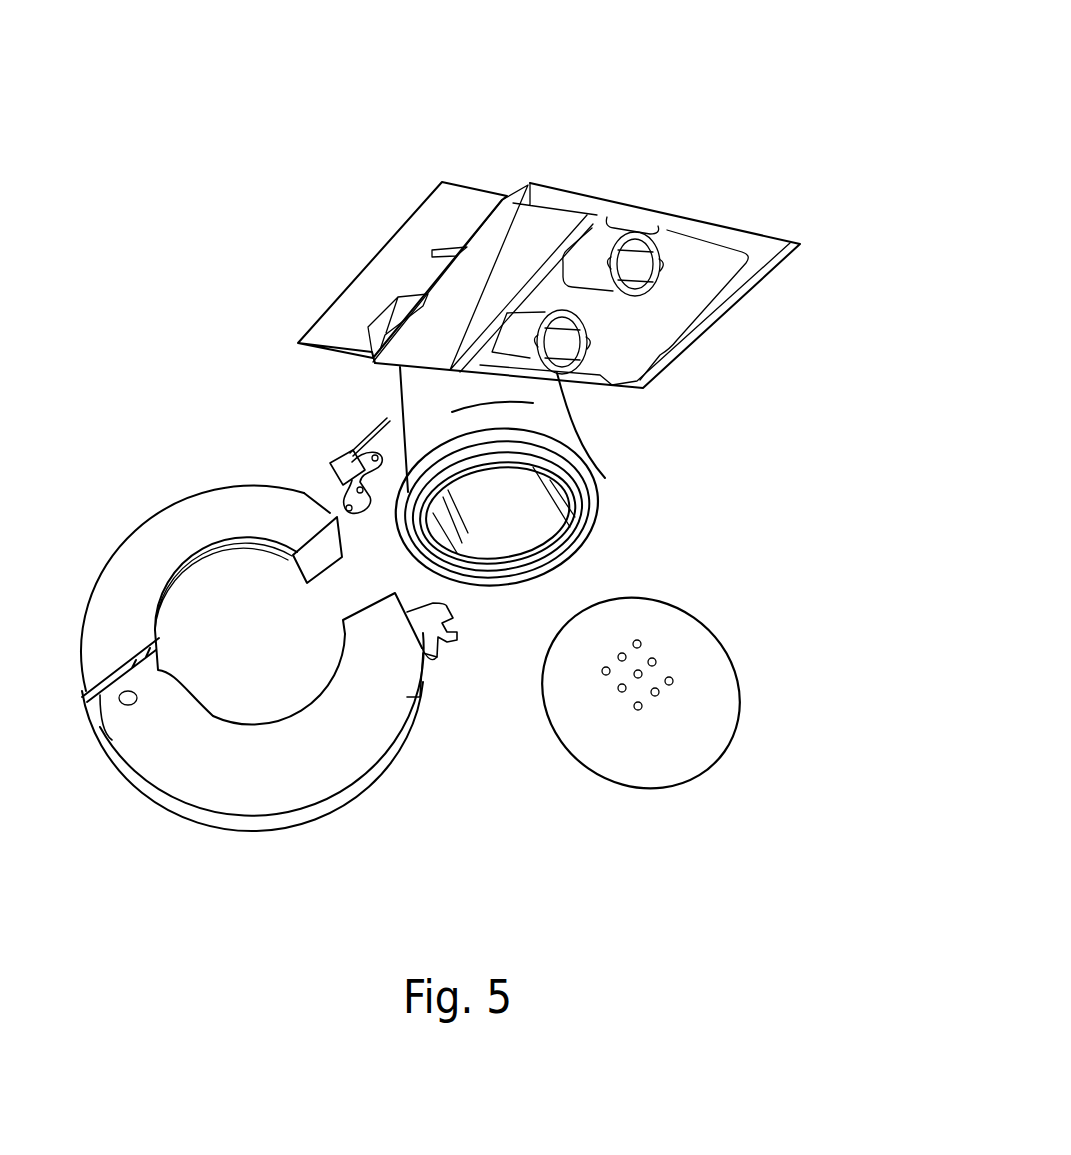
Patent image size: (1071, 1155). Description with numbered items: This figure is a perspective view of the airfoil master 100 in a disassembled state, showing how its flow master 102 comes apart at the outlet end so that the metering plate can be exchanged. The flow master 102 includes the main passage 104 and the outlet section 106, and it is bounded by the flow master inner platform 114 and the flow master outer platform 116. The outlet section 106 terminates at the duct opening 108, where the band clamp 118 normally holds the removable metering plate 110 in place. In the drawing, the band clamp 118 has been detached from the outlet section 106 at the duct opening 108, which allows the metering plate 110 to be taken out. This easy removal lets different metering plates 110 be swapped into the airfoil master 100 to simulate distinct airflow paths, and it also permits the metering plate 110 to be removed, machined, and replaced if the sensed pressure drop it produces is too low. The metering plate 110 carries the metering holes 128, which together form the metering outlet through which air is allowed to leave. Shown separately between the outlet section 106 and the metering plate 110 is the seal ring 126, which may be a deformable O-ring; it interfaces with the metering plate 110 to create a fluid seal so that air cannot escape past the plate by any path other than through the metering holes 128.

The airfoil master 100 is at (686, 118).
The flow master 102 is at (536, 200).
The main passage 104 is at (513, 196).
The outlet section 106 is at (445, 438).
The duct opening 108 is at (493, 542).
The metering plate 110 is at (665, 765).
The flow master inner platform 114 is at (765, 252).
The flow master outer platform 116 is at (441, 203).
The band clamp 118 is at (255, 780).
The seal ring 126 is at (592, 500).
The metering holes 128 is at (669, 681).